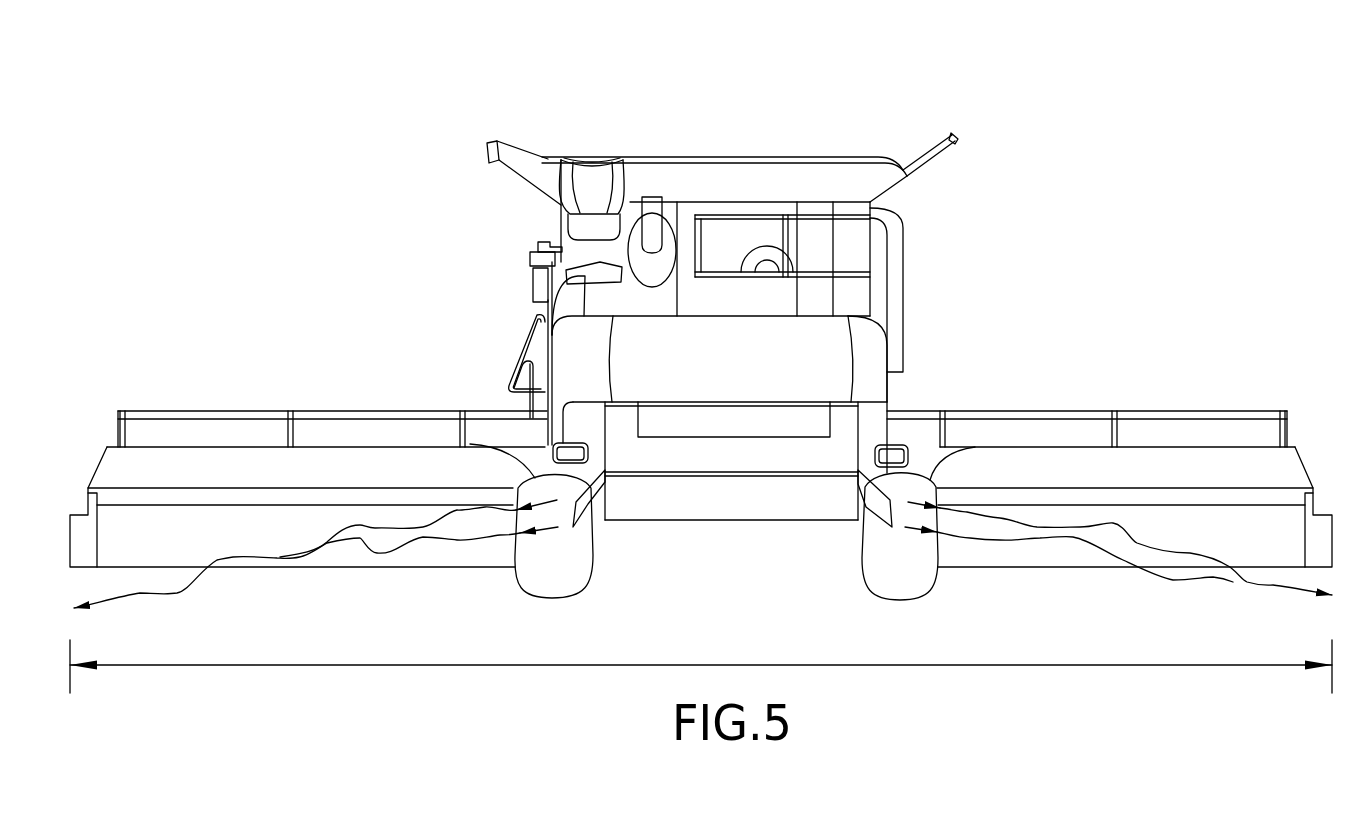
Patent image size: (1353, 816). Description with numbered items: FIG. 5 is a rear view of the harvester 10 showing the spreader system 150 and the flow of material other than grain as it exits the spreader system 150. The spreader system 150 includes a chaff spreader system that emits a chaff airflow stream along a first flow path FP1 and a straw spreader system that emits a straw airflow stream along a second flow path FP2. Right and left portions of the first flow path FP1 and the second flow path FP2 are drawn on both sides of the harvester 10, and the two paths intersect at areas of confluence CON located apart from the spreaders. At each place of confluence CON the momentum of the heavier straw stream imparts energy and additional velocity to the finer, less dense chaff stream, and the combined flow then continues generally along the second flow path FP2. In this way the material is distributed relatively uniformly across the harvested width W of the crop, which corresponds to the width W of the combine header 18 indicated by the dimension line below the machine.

The harvester 10 is at (1017, 135).
The combine header 18 is at (1062, 447).
The spreader system 150 is at (753, 547).
The first flow path FP1 is at (543, 495).
The second flow path FP2 is at (556, 533).
The place of confluence CON is at (273, 542).
The harvested width W is at (489, 665).